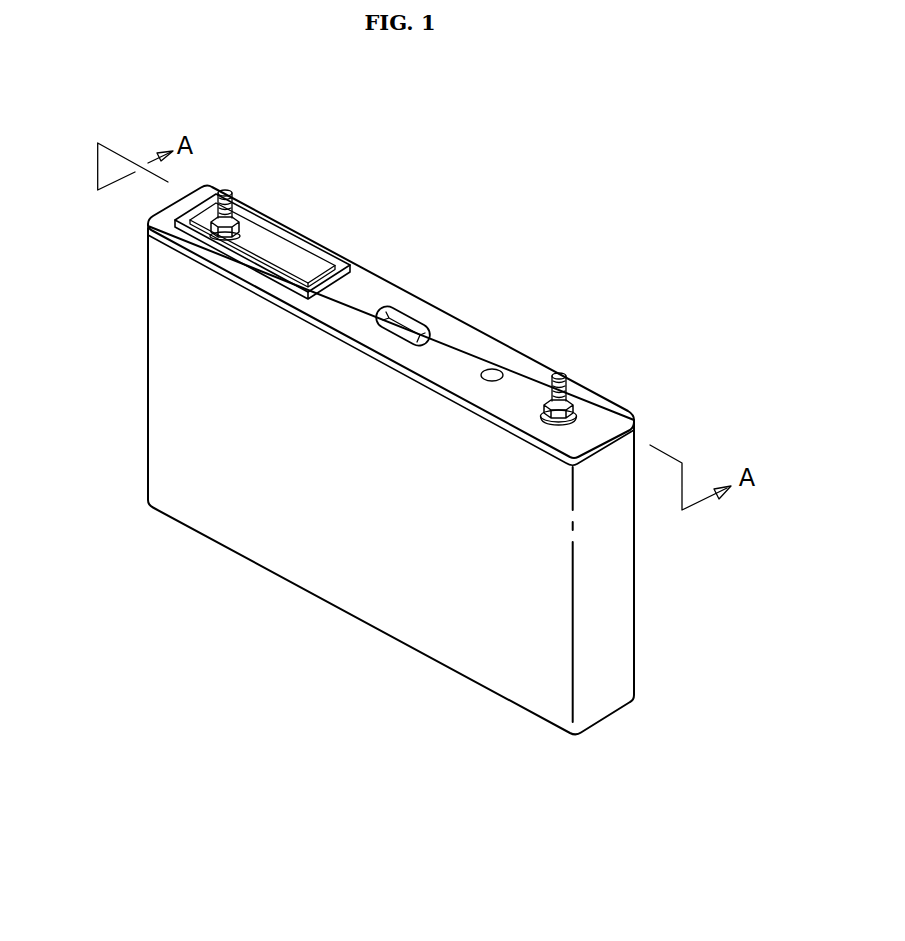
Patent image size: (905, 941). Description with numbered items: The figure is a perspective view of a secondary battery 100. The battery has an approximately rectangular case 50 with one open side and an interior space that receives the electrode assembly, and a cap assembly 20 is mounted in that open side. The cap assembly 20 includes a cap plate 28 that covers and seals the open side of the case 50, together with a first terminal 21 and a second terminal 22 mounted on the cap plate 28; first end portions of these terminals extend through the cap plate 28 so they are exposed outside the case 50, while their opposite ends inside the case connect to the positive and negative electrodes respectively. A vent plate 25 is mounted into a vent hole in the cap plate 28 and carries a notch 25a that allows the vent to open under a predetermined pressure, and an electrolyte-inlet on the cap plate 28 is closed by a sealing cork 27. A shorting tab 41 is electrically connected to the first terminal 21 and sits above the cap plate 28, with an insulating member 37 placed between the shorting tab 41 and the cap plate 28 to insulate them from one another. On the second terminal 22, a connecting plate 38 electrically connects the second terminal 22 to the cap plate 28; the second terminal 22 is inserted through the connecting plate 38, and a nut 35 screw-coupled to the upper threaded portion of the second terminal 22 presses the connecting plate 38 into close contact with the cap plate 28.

The secondary battery 100 is at (430, 170).
The case 50 is at (343, 595).
The cap assembly 20 is at (480, 328).
The first terminal 21 is at (226, 190).
The second terminal 22 is at (561, 373).
The vent plate 25 is at (406, 310).
The notch 25a is at (413, 322).
The sealing cork 27 is at (498, 370).
The cap plate 28 is at (376, 295).
The nut 35 is at (212, 237).
The insulating member 37 is at (292, 237).
The connecting plate 38 is at (579, 409).
The shorting tab 41 is at (253, 238).